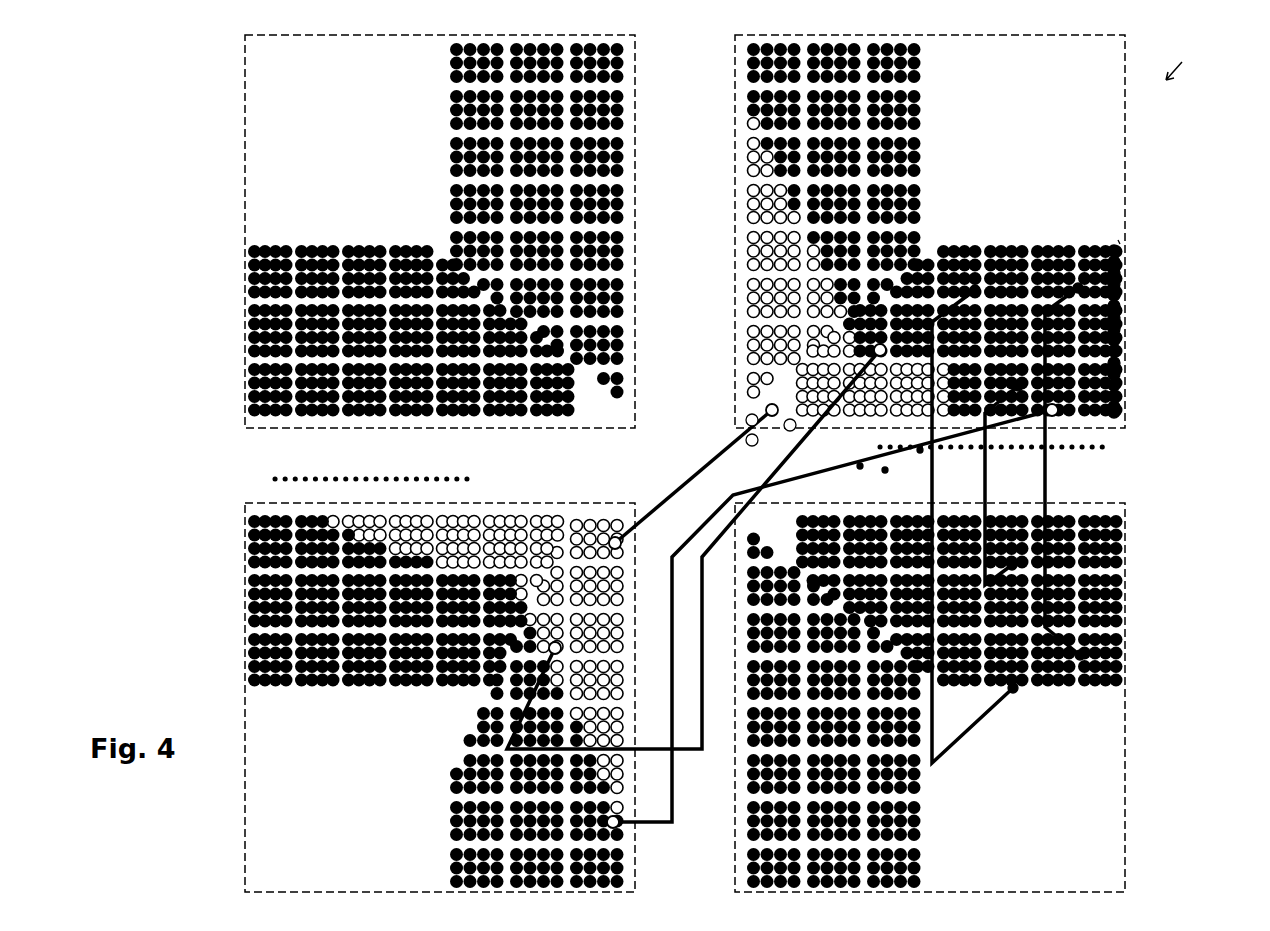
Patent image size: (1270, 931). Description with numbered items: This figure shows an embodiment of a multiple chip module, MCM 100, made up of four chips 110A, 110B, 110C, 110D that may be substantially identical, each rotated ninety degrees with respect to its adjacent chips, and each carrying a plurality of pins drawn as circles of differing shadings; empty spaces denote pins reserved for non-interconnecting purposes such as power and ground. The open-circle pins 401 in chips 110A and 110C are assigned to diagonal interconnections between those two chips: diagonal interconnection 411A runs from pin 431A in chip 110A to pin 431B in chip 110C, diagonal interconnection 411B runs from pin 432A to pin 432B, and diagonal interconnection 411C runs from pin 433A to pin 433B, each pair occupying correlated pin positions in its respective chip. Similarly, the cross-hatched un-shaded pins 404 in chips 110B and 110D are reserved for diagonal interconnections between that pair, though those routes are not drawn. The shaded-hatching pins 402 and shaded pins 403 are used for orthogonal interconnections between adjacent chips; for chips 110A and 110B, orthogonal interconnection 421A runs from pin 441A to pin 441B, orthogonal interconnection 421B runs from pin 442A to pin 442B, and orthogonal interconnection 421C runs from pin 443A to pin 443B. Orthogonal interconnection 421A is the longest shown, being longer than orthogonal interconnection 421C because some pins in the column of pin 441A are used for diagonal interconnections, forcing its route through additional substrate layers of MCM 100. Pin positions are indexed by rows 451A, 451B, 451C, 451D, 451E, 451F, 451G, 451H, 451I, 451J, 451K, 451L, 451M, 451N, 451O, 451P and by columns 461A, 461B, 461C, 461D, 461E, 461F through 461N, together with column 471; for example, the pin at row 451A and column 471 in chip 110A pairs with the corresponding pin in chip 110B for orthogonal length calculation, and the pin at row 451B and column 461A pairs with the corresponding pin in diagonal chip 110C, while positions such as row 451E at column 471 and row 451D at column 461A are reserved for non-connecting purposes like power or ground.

The MCM 100 is at (1191, 61).
The chip 110A is at (1125, 111).
The chip 110B is at (1125, 876).
The chip 110C is at (410, 503).
The chip 110D is at (352, 427).
The pins 401 is at (760, 288).
The pins 402 is at (450, 153).
The pins 403 is at (318, 244).
The pins 404 is at (540, 418).
The diagonal interconnection 411A is at (703, 478).
The diagonal interconnection 411B is at (700, 752).
The diagonal interconnection 411C is at (673, 822).
The orthogonal interconnection 421A is at (972, 526).
The orthogonal interconnection 421B is at (988, 470).
The orthogonal interconnection 421C is at (1048, 505).
The pin 431A is at (765, 409).
The pin 431B is at (622, 547).
The pin 432A is at (874, 350).
The pin 432B is at (549, 648).
The pin 433A is at (1060, 414).
The pin 433B is at (620, 827).
The pin 441A is at (1020, 246).
The pin 441B is at (1015, 692).
The pin 442A is at (1020, 386).
The pin 442B is at (1020, 555).
The pin 443A is at (1123, 238).
The pin 443B is at (1113, 690).
The row 451A is at (1122, 412).
The row 451B is at (1122, 407).
The row 451C is at (1122, 396).
The row 451D is at (1122, 385).
The row 451E is at (1122, 374).
The row 451F is at (1122, 363).
The row 451G is at (1122, 351).
The row 451H is at (1122, 340).
The row 451I is at (1122, 329).
The row 451J is at (1122, 318).
The row 451K is at (1122, 306).
The row 451L is at (1122, 295).
The row 451M is at (1122, 284).
The row 451N is at (1122, 273).
The row 451O is at (1122, 262).
The row 451P is at (1122, 251).
The column 461A is at (745, 426).
The column 461B is at (748, 447).
The column 461C is at (790, 430).
The column 461D is at (858, 466).
The column 461E is at (885, 472).
The column 461F is at (482, 473).
The column 461N is at (1108, 447).
The column 471 is at (1110, 233).